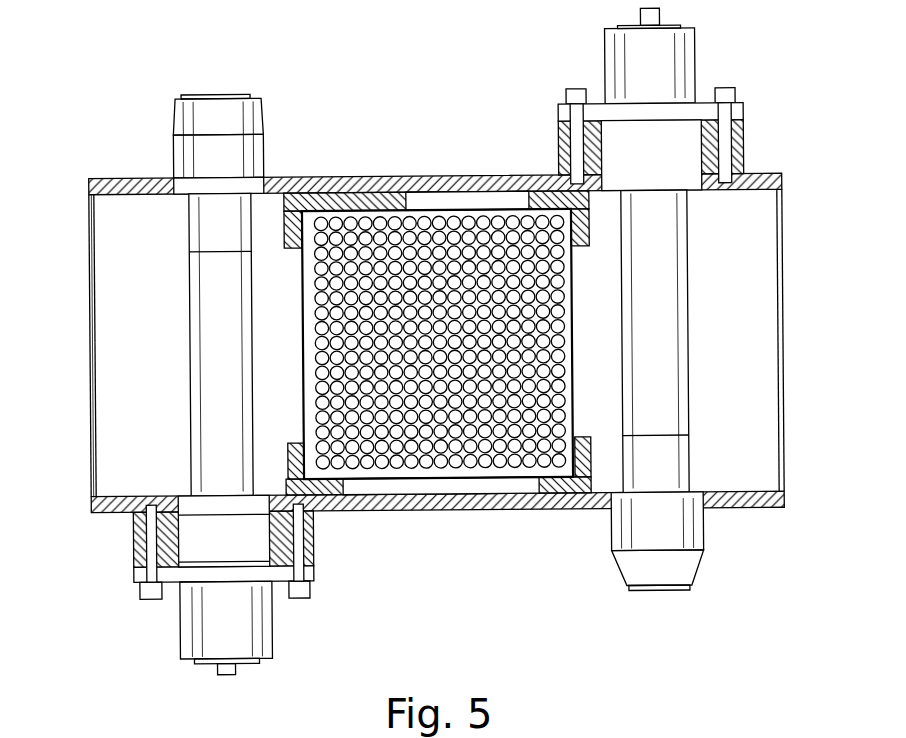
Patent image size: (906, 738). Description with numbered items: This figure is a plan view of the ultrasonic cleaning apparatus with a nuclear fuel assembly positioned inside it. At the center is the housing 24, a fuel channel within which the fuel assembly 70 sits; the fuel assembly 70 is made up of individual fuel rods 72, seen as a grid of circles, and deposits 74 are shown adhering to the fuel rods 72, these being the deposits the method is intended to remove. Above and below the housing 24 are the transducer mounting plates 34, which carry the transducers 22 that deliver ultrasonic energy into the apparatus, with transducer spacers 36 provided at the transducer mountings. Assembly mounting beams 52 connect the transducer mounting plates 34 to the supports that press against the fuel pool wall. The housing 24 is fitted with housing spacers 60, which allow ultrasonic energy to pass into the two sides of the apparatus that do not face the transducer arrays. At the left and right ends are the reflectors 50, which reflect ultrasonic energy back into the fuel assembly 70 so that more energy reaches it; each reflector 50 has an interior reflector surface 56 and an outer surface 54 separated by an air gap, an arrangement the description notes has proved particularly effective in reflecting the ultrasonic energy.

The transducer 22 is at (252, 613).
The housing 24 is at (452, 207).
The transducer mounting plate 34 is at (460, 510).
The transducer spacer 36 is at (132, 525).
The reflector 50 is at (90, 250).
The assembly mounting beam 52 is at (95, 362).
The outer surface 54 is at (90, 305).
The interior reflector surface 56 is at (93, 273).
The housing spacer 60 is at (578, 243).
The fuel assembly 70 is at (403, 215).
The fuel rod 72 is at (380, 218).
The deposit 74 is at (500, 472).